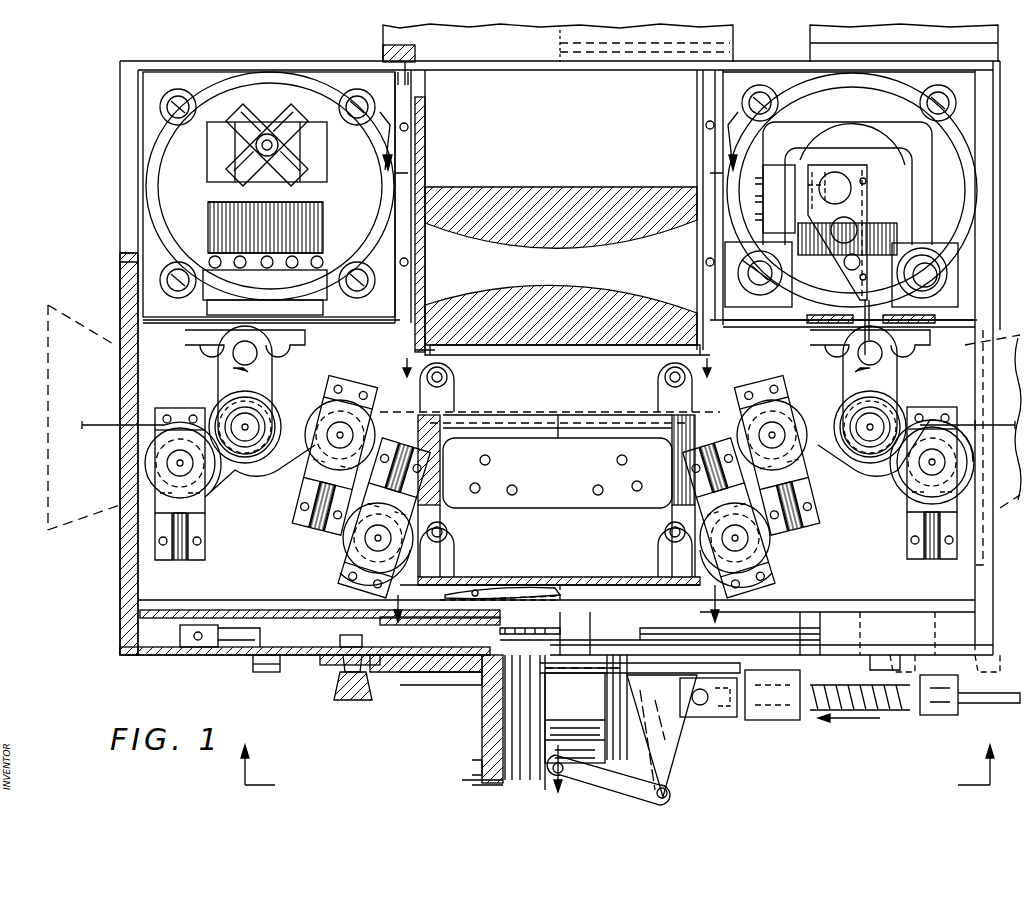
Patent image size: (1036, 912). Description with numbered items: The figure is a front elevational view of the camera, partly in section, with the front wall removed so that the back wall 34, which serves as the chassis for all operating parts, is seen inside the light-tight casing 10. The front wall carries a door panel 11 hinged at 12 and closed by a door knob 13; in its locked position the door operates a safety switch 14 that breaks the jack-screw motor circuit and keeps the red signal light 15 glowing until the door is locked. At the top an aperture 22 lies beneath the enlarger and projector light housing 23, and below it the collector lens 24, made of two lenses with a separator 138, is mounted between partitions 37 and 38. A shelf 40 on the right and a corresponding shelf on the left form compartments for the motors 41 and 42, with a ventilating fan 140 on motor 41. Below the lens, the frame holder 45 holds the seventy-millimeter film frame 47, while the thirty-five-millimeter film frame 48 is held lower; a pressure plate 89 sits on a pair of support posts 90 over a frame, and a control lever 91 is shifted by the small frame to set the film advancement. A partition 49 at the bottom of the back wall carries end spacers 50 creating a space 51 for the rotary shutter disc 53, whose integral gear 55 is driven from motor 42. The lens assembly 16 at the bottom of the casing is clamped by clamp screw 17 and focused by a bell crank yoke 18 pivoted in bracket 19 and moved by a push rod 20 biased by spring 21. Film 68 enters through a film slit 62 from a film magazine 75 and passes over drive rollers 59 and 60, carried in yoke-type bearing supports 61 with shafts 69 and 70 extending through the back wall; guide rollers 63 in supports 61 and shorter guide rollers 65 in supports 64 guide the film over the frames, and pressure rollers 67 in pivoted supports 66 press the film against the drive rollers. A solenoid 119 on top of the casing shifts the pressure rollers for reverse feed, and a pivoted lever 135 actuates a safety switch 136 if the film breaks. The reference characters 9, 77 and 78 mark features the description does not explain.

The section line arrows 9 is at (555, 364).
The light-tight casing 10 is at (995, 118).
The door panel 11 is at (558, 615).
The hinge 12 is at (561, 142).
The door knob 13 is at (617, 763).
The safety switch 14 is at (236, 655).
The red signal light 15 is at (925, 300).
The lens assembly 16 is at (468, 716).
The clamp screw 17 is at (336, 700).
The bell crank yoke 18 is at (600, 790).
The bracket 19 is at (672, 760).
The push rod 20 is at (978, 705).
The spring 21 is at (820, 712).
The aperture 22 is at (415, 68).
The enlarger and projector light housing 23 is at (382, 40).
The collector lens 24 is at (640, 240).
The back wall 34 is at (143, 88).
The partition 37 is at (412, 145).
The partition 38 is at (708, 140).
The horizontal shelf 40 is at (758, 327).
The motor 41 is at (207, 128).
The motor 42 is at (925, 140).
The frame holder 45 is at (472, 505).
The 70 mm film frame 47 is at (448, 440).
The 35 mm film frame 48 is at (485, 585).
The partition 49 is at (268, 610).
The end spacers 50 is at (160, 655).
The space 51 is at (300, 670).
The rotary shutter disc 53 is at (482, 625).
The gear 55 is at (655, 633).
The film drive roller 59 is at (905, 480).
The film drive roller 60 is at (212, 470).
The yoke-type bearing supports 61 is at (160, 520).
The film slit 62 is at (140, 420).
The guide rollers 63 is at (308, 440).
The fixed supports 64 is at (345, 570).
The guide rollers 65 is at (342, 545).
The yoke-type bearing supports 66 is at (268, 365).
The pressure rollers 67 is at (270, 430).
The film 68 is at (110, 420).
The shaft 69 is at (904, 468).
The shaft 70 is at (172, 464).
The film magazine 75 is at (110, 322).
The drive sprocket 77 is at (862, 355).
The drive sprocket 78 is at (242, 355).
The pressure plate 89 is at (600, 412).
The support posts 90 is at (450, 372).
The control lever 91 is at (562, 598).
The solenoid 119 is at (812, 30).
The pivoted lever 135 is at (848, 165).
The safety switch 136 is at (778, 165).
The separator 138 is at (426, 264).
The ventilating fan 140 is at (245, 105).